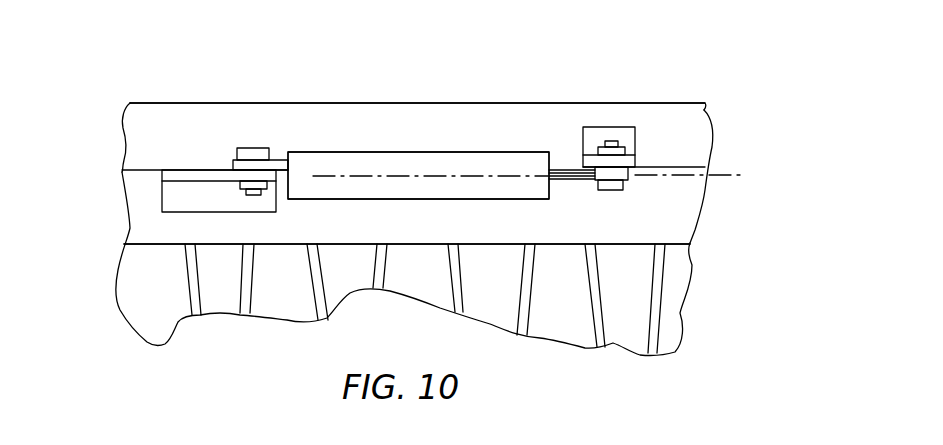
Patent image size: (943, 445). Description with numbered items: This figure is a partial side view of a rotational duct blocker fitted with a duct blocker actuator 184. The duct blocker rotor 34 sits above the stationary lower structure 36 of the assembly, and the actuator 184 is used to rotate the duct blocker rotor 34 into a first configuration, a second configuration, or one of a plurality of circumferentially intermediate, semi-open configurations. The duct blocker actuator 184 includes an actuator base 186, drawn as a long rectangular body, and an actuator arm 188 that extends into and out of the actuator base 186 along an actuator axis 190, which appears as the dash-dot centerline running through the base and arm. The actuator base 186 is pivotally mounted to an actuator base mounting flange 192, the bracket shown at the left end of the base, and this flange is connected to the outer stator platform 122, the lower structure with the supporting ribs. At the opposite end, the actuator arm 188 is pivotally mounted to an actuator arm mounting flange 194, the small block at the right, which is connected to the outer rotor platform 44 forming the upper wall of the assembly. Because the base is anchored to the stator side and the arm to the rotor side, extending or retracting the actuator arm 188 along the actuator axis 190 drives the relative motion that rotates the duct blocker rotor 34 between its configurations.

The duct blocker rotor 34 is at (713, 148).
The lower frame 36 is at (702, 218).
The outer rotor platform 44 is at (137, 141).
The outer stator platform 122 is at (132, 228).
The duct blocker actuator 184 is at (397, 138).
The actuator base 186 is at (335, 163).
The actuator arm 188 is at (562, 177).
The actuator axis 190 is at (658, 176).
The actuator base mounting flange 192 is at (181, 177).
The actuator arm mounting flange 194 is at (633, 161).